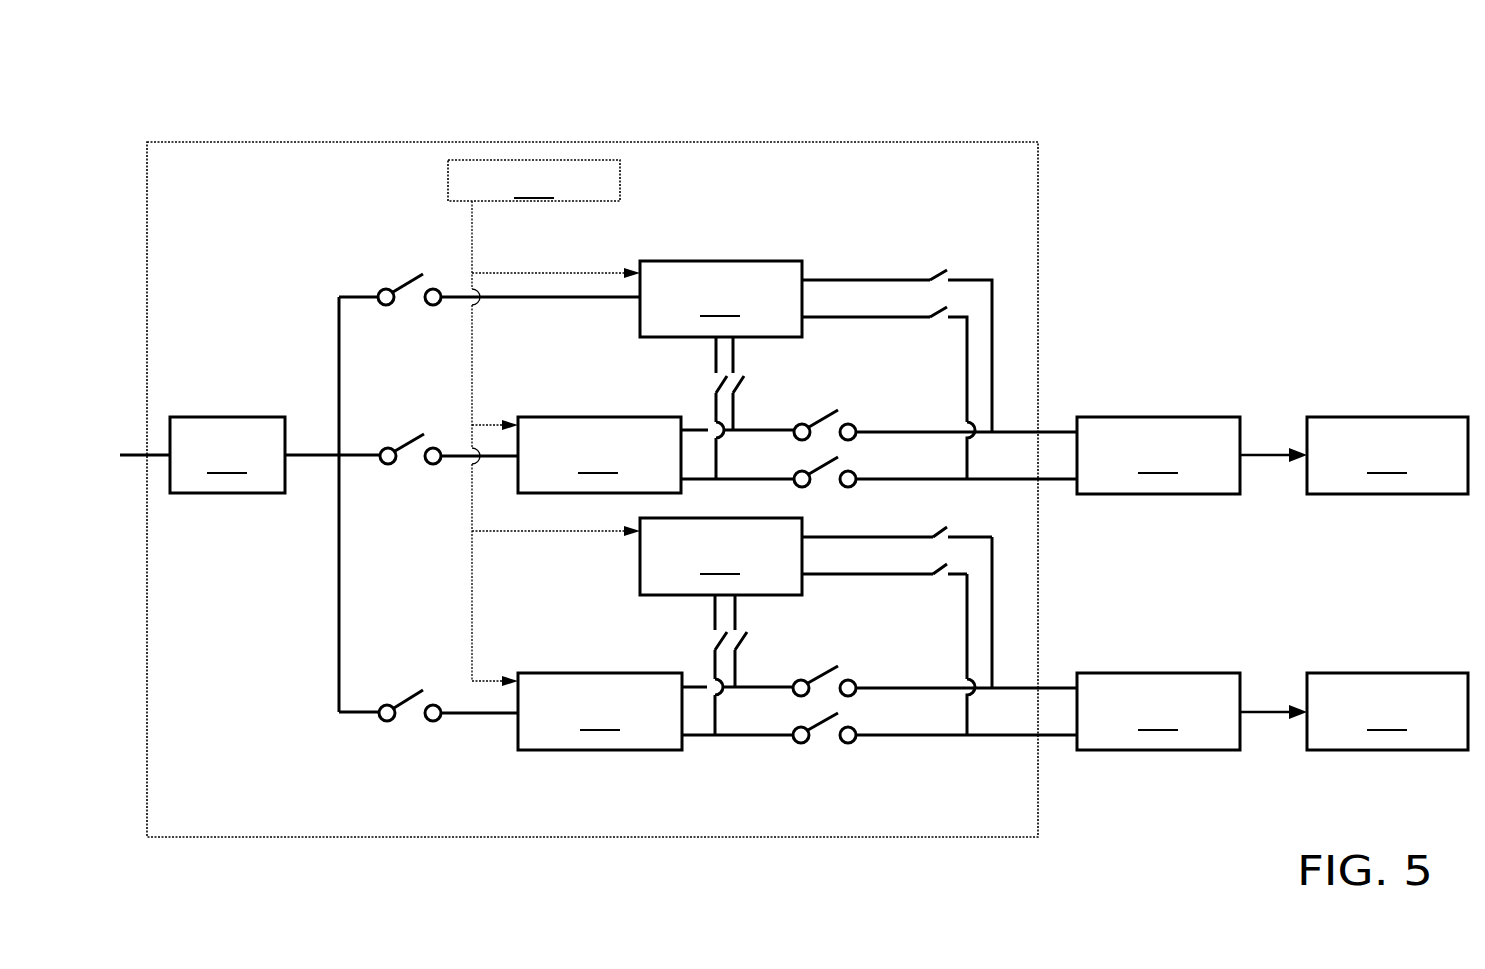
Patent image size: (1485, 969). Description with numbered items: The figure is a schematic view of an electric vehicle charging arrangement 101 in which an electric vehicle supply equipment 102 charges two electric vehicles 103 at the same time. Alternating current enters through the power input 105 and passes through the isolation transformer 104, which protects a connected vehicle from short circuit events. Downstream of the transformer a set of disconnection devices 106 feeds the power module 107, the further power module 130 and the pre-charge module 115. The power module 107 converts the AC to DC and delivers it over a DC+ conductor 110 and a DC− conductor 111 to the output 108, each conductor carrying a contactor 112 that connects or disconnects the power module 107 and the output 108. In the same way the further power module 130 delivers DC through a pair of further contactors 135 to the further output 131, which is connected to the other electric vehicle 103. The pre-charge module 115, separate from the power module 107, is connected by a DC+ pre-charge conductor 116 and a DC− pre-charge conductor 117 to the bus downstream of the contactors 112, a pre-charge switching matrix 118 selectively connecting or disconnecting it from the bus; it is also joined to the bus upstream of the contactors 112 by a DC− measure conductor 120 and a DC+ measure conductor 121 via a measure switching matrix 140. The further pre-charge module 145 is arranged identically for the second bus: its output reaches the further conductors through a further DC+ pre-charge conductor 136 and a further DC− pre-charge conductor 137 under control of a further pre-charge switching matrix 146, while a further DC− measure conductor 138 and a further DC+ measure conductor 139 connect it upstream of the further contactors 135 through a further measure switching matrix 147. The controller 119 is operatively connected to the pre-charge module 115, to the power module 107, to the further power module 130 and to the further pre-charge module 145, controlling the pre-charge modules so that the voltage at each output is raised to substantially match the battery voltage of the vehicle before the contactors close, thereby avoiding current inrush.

The electric vehicle charging arrangement 101 is at (166, 119).
The electric vehicle supply equipment 102 is at (288, 142).
The electric vehicle 103 is at (1387, 583).
The isolation transformer 104 is at (227, 455).
The power input 105 is at (133, 455).
The disconnection device 106 is at (421, 278).
The power module 107 is at (599, 455).
The output 108 is at (1192, 455).
The DC+ conductor 110 is at (925, 429).
The DC− conductor 111 is at (897, 480).
The contactor 112 is at (830, 412).
The pre-charge module 115 is at (721, 299).
The DC+ pre-charge conductor 116 is at (897, 279).
The DC− pre-charge conductor 117 is at (830, 313).
The pre-charge switching matrix 118 is at (948, 309).
The controller 119 is at (544, 423).
The DC− measure conductor 120 is at (718, 458).
The DC+ measure conductor 121 is at (740, 413).
The further power module 130 is at (600, 711).
The further output 131 is at (1192, 711).
The further contactor 135 is at (830, 672).
The further DC+ pre-charge conductor 136 is at (993, 590).
The further DC− pre-charge conductor 137 is at (969, 643).
The further DC− measure conductor 138 is at (737, 661).
The further DC+ measure conductor 139 is at (710, 722).
The measure switching matrix 140 is at (718, 386).
The further pre-charge module 145 is at (721, 556).
The further pre-charge switching matrix 146 is at (937, 538).
The further measure switching matrix 147 is at (718, 648).